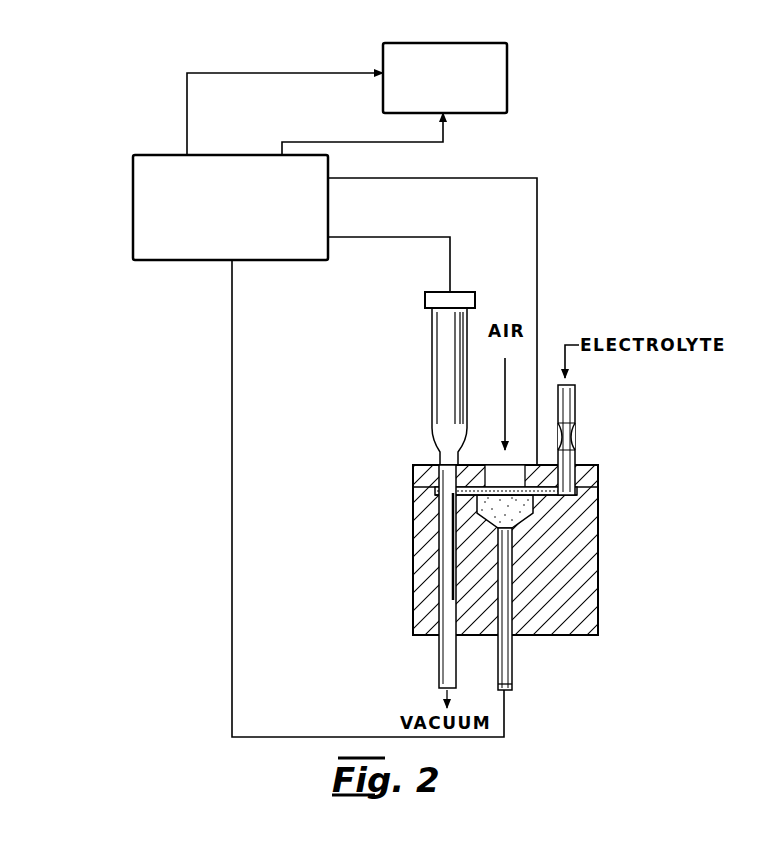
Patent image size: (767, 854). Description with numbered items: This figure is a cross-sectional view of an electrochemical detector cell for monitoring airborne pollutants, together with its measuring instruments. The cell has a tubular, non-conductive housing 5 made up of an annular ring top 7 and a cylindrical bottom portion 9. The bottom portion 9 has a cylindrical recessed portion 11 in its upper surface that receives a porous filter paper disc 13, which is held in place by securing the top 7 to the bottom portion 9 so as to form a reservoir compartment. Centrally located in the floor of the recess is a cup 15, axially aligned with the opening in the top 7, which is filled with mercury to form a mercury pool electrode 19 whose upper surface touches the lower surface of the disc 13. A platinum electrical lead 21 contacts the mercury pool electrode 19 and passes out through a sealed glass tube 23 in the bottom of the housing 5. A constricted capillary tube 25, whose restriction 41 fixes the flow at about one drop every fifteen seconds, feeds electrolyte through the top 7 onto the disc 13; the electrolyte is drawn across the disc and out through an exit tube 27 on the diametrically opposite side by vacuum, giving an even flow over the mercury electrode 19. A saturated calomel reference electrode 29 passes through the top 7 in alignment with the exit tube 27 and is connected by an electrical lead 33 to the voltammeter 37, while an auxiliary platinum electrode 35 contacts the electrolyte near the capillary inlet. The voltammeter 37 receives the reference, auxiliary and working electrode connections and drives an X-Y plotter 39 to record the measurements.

The housing 5 is at (397, 530).
The annular ring top 7 is at (413, 473).
The cylindrical bottom portion 9 is at (413, 559).
The recessed portion 11 is at (567, 497).
The filter paper disc 13 is at (578, 489).
The cup 15 is at (532, 520).
The mercury pool electrode 19 is at (478, 511).
The electrical lead 21 is at (512, 648).
The sealed glass tube 23 is at (512, 681).
The capillary tube 25 is at (575, 401).
The exit tube 27 is at (439, 678).
The saturated calomel reference electrode 29 is at (432, 386).
The electrical lead 33 is at (362, 237).
The auxiliary platinum electrode 35 is at (537, 264).
The voltammeter 37 is at (133, 178).
The X-Y plotter 39 is at (507, 75).
The restriction 41 is at (573, 437).